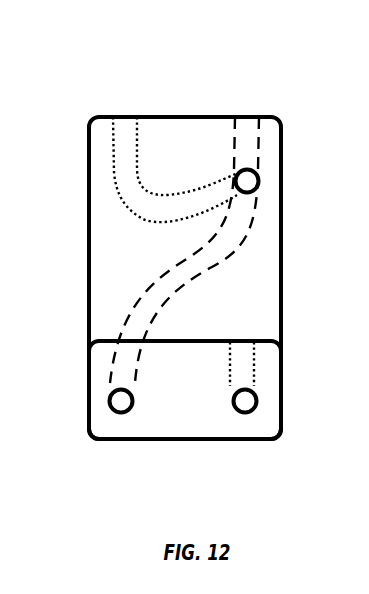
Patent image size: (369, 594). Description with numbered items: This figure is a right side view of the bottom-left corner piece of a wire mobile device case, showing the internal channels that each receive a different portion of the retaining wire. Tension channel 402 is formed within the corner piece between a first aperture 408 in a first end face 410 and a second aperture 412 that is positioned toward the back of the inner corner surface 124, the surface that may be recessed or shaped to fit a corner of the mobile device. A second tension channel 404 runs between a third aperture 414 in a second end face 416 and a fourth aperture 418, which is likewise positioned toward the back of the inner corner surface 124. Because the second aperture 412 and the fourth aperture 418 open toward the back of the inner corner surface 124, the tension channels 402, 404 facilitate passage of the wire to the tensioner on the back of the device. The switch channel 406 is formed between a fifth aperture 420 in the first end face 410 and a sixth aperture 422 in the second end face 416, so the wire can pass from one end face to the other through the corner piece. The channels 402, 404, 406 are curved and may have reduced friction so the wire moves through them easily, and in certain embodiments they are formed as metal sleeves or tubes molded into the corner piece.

The inner corner surface 124 is at (252, 296).
The tension channel 402 is at (119, 182).
The tension channel 404 is at (194, 392).
The switch channel 406 is at (169, 279).
The first aperture 408 is at (120, 114).
The first end face 410 is at (170, 114).
The second aperture 412 is at (258, 181).
The third aperture 414 is at (246, 406).
The second end face 416 is at (247, 370).
The fourth aperture 418 is at (241, 337).
The fifth aperture 420 is at (247, 114).
The sixth aperture 422 is at (120, 406).